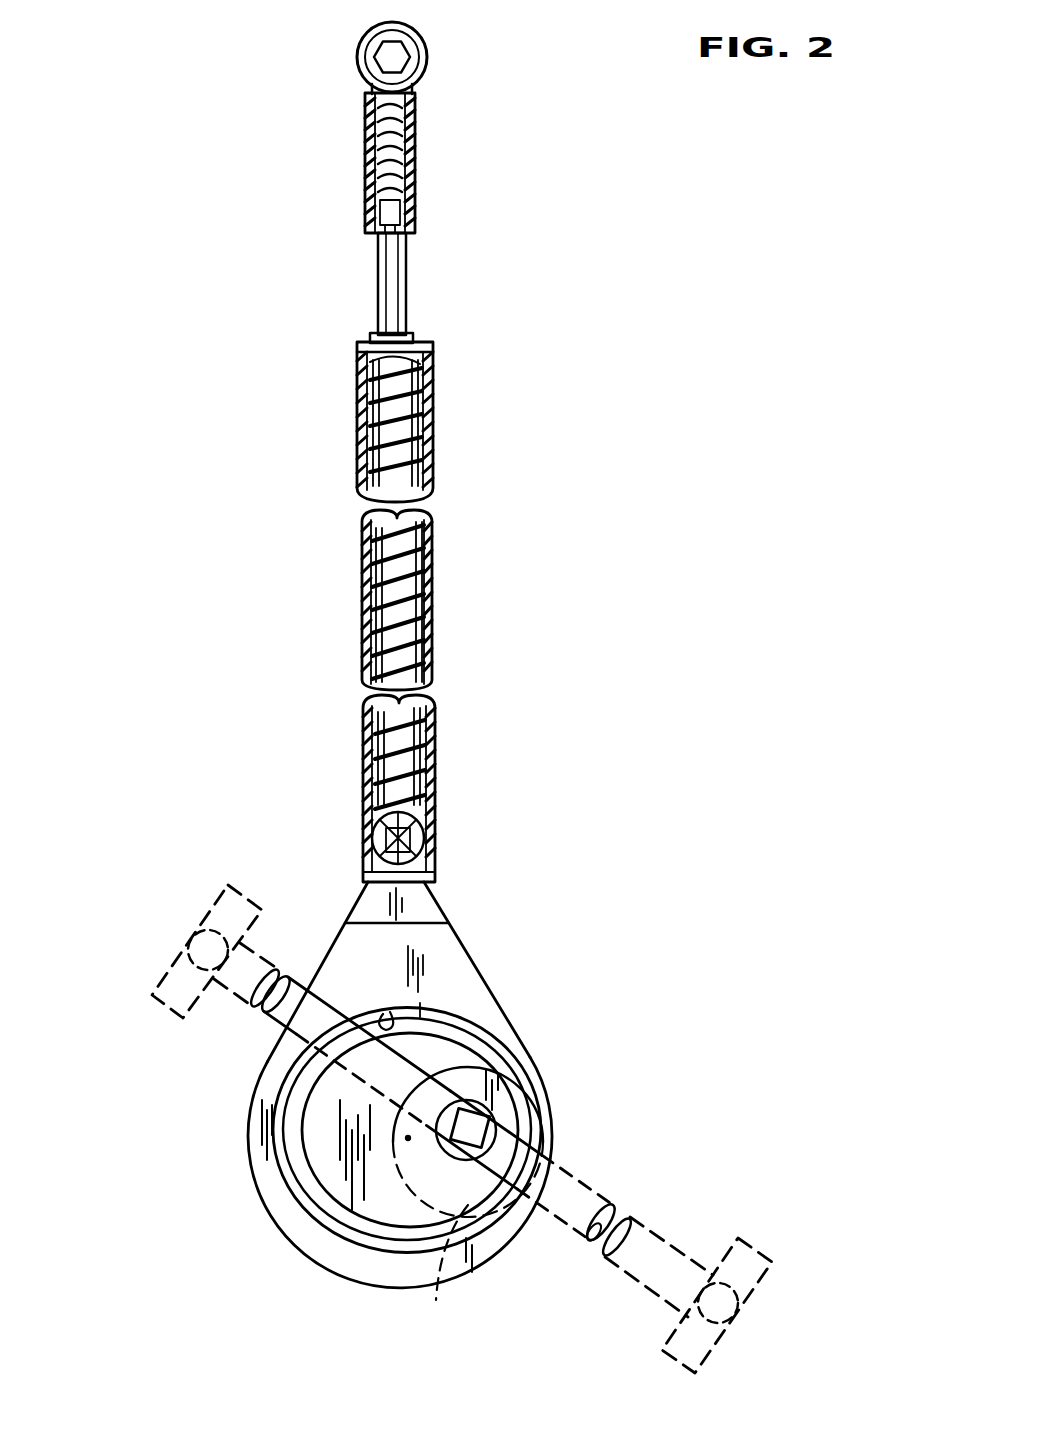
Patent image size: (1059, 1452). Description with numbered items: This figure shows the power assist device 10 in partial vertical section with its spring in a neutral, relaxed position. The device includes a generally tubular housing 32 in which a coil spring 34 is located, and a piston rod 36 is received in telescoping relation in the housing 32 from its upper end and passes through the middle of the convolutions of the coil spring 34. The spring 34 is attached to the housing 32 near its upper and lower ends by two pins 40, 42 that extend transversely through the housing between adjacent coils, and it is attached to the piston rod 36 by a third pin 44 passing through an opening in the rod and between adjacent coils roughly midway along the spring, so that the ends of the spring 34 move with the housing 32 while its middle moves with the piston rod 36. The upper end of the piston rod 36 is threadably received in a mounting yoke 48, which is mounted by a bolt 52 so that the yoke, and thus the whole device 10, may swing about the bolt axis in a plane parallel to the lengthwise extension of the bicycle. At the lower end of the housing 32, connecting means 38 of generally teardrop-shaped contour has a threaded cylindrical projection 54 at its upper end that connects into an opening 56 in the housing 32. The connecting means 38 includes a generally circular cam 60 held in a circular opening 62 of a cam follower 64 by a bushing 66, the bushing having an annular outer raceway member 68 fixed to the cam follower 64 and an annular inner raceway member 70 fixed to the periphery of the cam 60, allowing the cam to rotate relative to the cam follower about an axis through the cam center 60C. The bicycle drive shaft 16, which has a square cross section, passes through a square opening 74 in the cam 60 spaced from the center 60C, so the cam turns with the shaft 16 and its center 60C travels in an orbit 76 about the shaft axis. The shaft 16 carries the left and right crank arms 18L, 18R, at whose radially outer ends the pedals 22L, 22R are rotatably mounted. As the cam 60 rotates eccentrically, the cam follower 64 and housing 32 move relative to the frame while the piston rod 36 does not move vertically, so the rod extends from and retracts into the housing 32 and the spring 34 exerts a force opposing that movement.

The power assist device 10 is at (626, 546).
The shaft 16 is at (532, 1148).
The right crank arm 18R is at (272, 1032).
The left crank arm 18L is at (660, 1232).
The right pedal 22R is at (212, 912).
The left pedal 22L is at (742, 1240).
The housing 32 is at (441, 600).
The coil spring 34 is at (399, 788).
The piston rod 36 is at (398, 298).
The connecting means 38 is at (393, 1108).
The first pin 40 is at (426, 428).
The second pin 42 is at (428, 807).
The third pin 44 is at (412, 623).
The mounting yoke 48 is at (418, 222).
The bolt 52 is at (410, 65).
The cylindrical projection 54 is at (375, 836).
The opening 56 is at (432, 842).
The cam 60 is at (330, 1162).
The cam center 60C is at (408, 1138).
The circular opening 62 is at (388, 1016).
The cam follower 64 is at (265, 1082).
The bushing 66 is at (352, 1255).
The outer raceway member 68 is at (520, 1052).
The inner raceway member 70 is at (480, 1202).
The square opening 74 is at (527, 1108).
The orbit 76 is at (440, 1302).